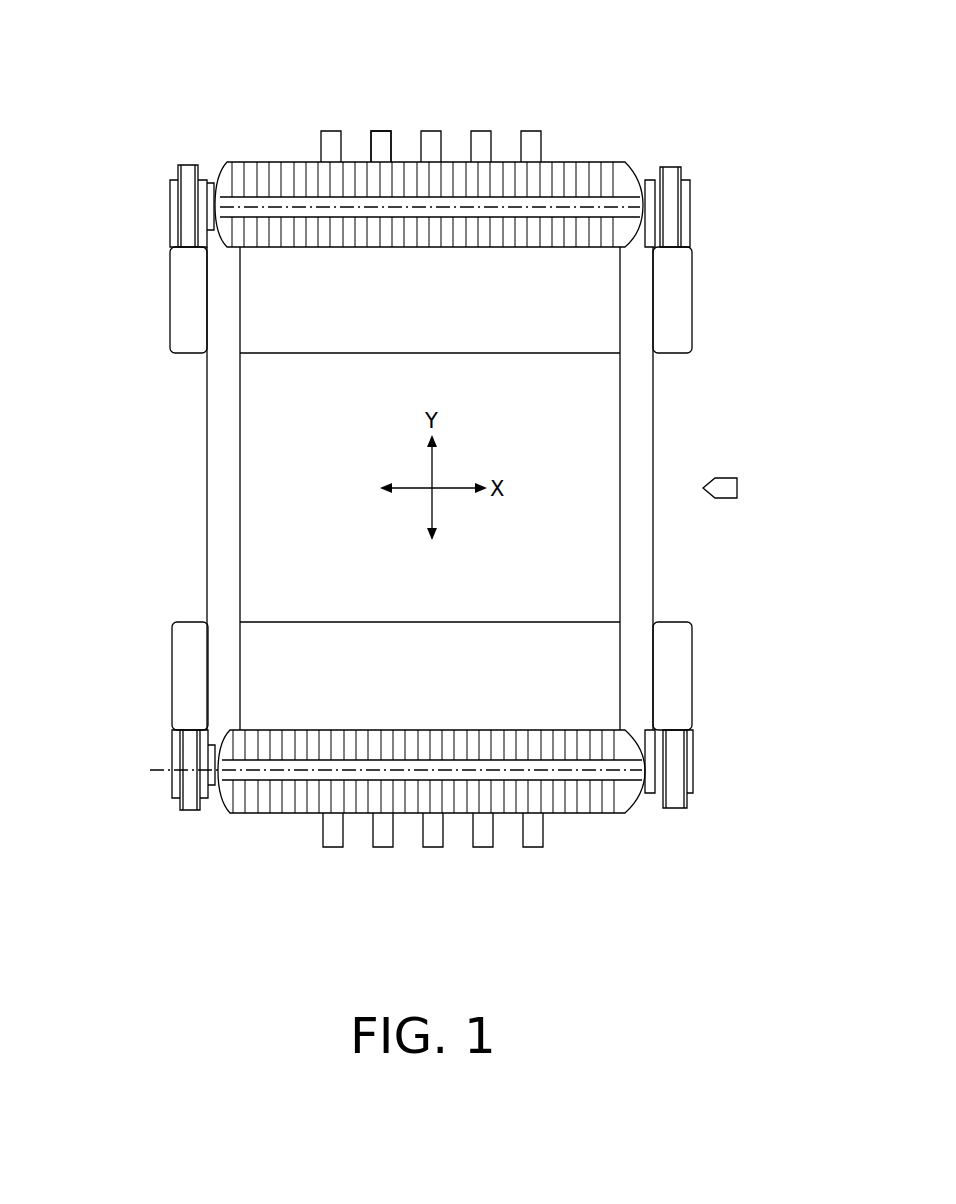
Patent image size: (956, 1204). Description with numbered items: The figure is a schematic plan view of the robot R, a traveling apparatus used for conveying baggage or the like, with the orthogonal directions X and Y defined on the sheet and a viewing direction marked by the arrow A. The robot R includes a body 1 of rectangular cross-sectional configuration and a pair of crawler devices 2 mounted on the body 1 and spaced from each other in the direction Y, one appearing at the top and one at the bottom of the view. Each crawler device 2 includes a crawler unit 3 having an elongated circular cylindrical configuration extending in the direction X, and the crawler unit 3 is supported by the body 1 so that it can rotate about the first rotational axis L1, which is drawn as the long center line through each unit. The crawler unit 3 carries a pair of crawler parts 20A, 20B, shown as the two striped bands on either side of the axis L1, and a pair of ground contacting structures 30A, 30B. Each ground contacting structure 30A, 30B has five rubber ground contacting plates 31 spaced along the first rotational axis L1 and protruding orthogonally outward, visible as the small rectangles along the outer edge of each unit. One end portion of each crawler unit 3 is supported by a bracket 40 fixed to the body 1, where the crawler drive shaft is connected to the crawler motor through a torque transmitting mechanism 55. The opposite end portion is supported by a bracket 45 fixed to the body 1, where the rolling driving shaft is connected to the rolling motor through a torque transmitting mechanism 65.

The body 1 is at (593, 403).
The crawler device 2 is at (607, 150).
The crawler unit 3 is at (567, 157).
The crawler part 20A is at (300, 160).
The crawler part 20B is at (327, 250).
The ground contacting structure 30A is at (433, 130).
The ground contacting structure 30B is at (433, 830).
The ground contacting plate 31 is at (388, 130).
The bracket 40 is at (685, 302).
The bracket 45 is at (180, 300).
The torque transmitting mechanism 55 is at (688, 160).
The torque transmitting mechanism 65 is at (165, 175).
The first rotational axis L1 is at (273, 207).
The robot R is at (520, 95).
The viewing direction A is at (720, 473).